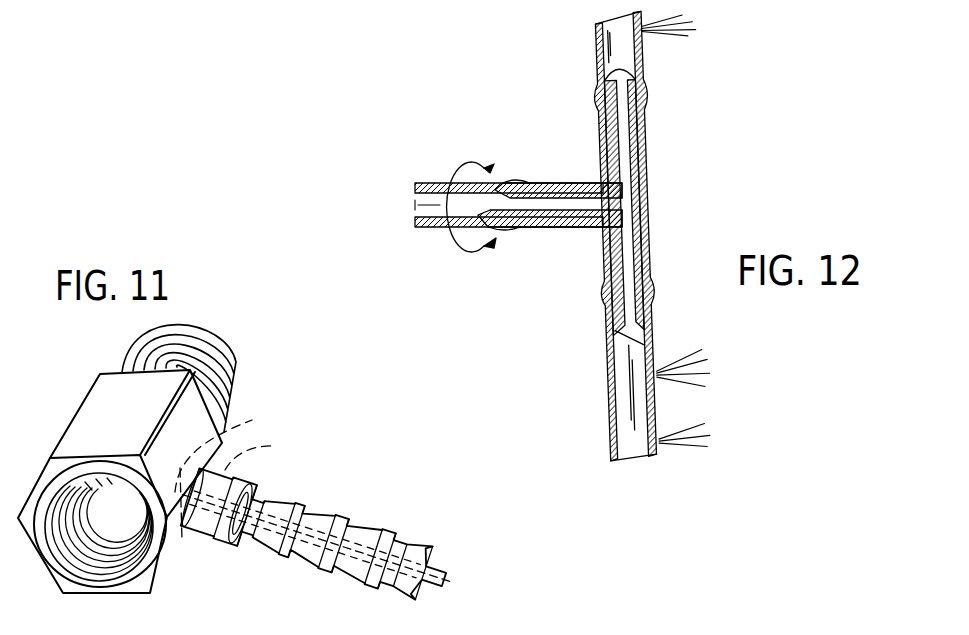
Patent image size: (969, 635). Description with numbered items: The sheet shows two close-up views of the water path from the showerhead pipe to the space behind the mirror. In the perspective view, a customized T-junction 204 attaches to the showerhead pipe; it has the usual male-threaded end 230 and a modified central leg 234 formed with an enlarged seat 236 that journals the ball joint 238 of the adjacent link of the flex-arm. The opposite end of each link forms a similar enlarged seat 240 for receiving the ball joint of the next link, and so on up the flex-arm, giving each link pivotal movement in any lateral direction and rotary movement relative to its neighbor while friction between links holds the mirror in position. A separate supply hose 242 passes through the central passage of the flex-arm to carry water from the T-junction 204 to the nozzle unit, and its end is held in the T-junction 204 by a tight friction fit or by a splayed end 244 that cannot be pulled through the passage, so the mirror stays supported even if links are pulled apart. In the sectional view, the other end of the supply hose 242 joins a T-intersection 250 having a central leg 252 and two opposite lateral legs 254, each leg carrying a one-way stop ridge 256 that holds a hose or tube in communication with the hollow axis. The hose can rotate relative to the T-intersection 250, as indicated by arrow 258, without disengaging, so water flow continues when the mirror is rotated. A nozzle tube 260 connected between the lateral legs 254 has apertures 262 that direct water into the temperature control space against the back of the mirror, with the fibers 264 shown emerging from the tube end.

In FIG. 11, the T-junction 204 is at (97, 393).
In FIG. 11, the male-threaded end 230 is at (233, 376).
In FIG. 11, the central leg 234 is at (193, 537).
In FIG. 11, the enlarged seat 236 is at (228, 540).
In FIG. 11, the ball joint 238 is at (377, 582).
In FIG. 11, the enlarged seat 240 is at (387, 523).
In FIG. 11, the supply hose 242 is at (437, 594).
In FIG. 11, the splayed end 244 is at (235, 469).
In FIG. 12, the T-intersection 250 is at (660, 176).
In FIG. 12, the central leg 252 is at (583, 228).
In FIG. 12, the lateral legs 254 is at (647, 282).
In FIG. 12, the one-way stop ridge 256 is at (648, 78).
In FIG. 12, the arrow 258 is at (462, 173).
In FIG. 12, the nozzle tube 260 is at (662, 406).
In FIG. 12, the apertures 262 is at (642, 458).
In FIG. 12, the fibers 264 is at (690, 357).